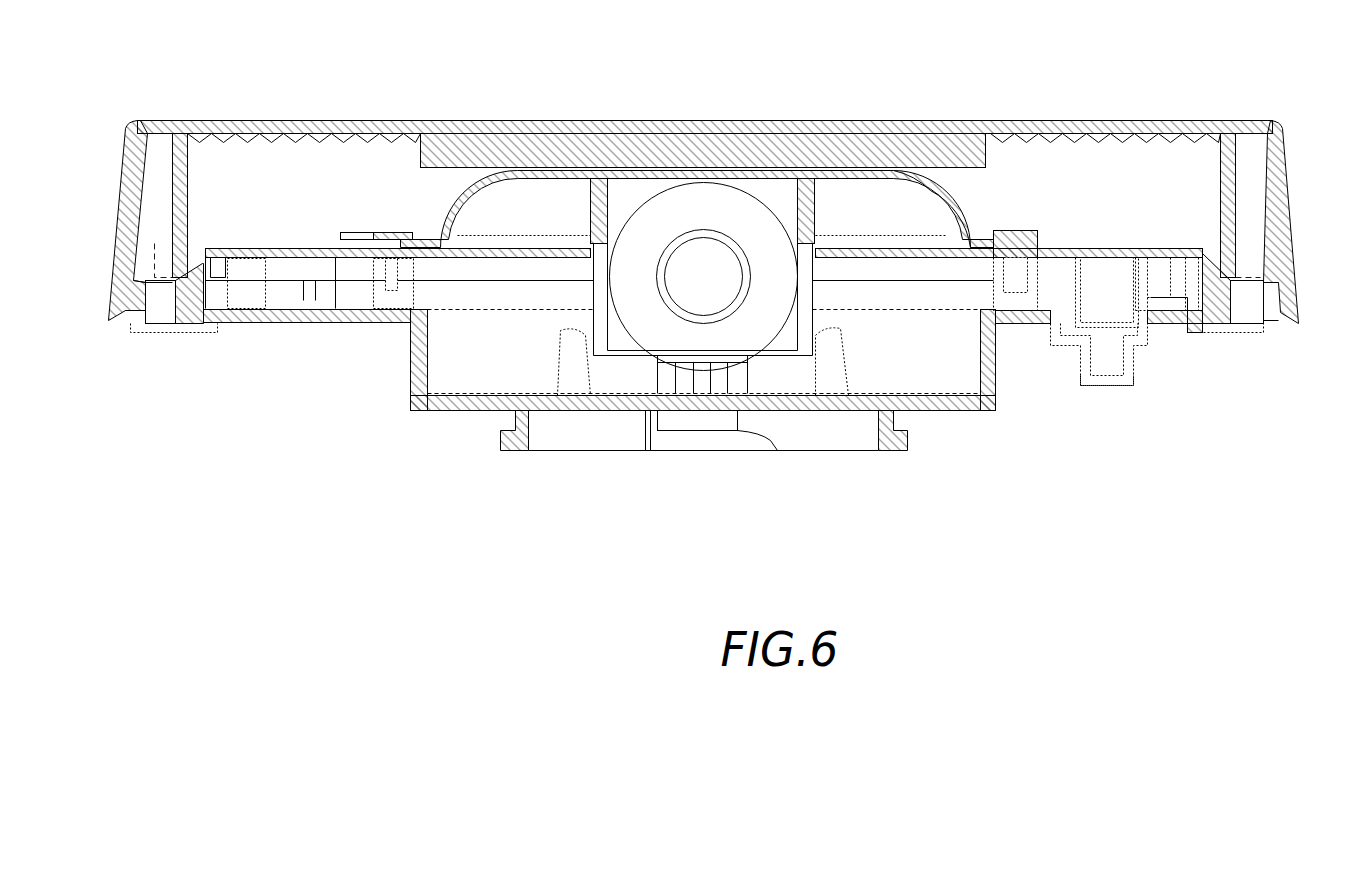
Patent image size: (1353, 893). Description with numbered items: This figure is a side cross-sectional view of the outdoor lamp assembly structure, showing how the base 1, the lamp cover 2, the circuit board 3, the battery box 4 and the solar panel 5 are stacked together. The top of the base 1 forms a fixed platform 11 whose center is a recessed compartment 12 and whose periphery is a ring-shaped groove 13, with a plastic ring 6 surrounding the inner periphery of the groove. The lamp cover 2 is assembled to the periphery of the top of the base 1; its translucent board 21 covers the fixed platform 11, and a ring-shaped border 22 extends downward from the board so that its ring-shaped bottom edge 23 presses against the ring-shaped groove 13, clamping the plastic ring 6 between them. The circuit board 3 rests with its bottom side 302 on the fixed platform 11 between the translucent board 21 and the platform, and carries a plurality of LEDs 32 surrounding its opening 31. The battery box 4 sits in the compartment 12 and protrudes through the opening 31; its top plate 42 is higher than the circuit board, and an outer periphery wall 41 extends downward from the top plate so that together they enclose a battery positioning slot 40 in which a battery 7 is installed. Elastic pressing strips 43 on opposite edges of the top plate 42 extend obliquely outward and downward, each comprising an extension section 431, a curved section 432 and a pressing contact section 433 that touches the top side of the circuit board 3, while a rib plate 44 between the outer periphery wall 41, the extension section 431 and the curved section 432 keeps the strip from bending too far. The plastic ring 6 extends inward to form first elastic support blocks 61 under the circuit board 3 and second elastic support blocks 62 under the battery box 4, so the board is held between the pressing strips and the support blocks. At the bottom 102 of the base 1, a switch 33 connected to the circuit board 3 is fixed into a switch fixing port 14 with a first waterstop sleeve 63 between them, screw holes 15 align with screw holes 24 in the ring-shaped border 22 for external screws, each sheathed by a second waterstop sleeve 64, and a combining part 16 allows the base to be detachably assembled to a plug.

The base 1 is at (1193, 346).
The lamp cover 2 is at (1205, 108).
The circuit board 3 is at (1168, 280).
The battery box 4 is at (637, 150).
The solar panel 5 is at (736, 167).
The plastic ring 6 is at (125, 276).
The battery 7 is at (715, 202).
The fixed platform 11 is at (283, 290).
The compartment 12 is at (935, 385).
The ring-shaped groove 13 is at (120, 290).
The switch fixing port 14 is at (1100, 347).
The screw hole 15 is at (155, 305).
The combining part 16 is at (520, 450).
The translucent board 21 is at (978, 143).
The ring-shaped border 22 is at (135, 212).
The ring-shaped bottom edge 23 is at (122, 323).
The screw hole 24 is at (158, 177).
The opening 31 is at (1052, 237).
The LED 32 is at (945, 200).
The switch 33 is at (1107, 283).
The battery positioning slot 40 is at (786, 200).
The outer periphery wall 41 is at (868, 207).
The top plate 42 is at (660, 178).
The elastic pressing strip 43 is at (380, 78).
The rib plate 44 is at (856, 200).
The first elastic support block 61 is at (383, 308).
The second elastic support block 62 is at (833, 365).
The first waterstop sleeve 63 is at (1108, 387).
The second waterstop sleeve 64 is at (148, 240).
The bottom 102 is at (310, 322).
The bottom side 302 is at (1175, 265).
The extension section 431 is at (543, 167).
The curved section 432 is at (466, 205).
The pressing contact section 433 is at (395, 232).